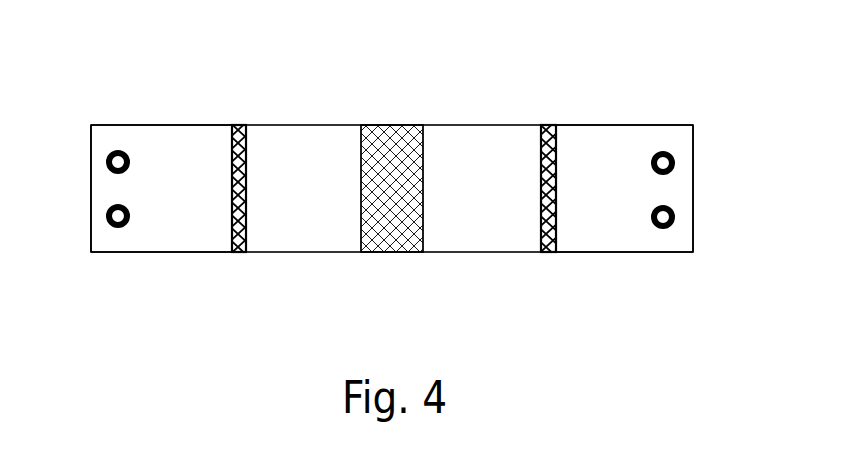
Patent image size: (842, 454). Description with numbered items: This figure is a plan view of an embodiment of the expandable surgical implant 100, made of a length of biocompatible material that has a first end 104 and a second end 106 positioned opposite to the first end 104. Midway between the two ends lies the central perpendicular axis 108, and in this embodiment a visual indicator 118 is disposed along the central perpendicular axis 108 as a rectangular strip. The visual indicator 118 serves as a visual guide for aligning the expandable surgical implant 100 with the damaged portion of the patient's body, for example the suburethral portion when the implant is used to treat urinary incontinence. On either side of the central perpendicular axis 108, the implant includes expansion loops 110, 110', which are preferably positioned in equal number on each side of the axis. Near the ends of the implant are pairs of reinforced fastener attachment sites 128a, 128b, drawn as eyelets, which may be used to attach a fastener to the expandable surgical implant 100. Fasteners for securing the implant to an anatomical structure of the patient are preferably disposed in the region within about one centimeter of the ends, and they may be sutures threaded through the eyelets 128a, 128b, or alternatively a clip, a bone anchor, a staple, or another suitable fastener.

The expandable surgical implant 100 is at (390, 64).
The first end 104 is at (113, 252).
The second end 106 is at (683, 253).
The central perpendicular axis 108 is at (382, 252).
The expansion loop 110 is at (247, 217).
The expansion loop 110' is at (558, 215).
The visual indicator 118 is at (407, 127).
The reinforced fastener attachment site 128a is at (130, 160).
The reinforced fastener attachment site 128b is at (105, 215).